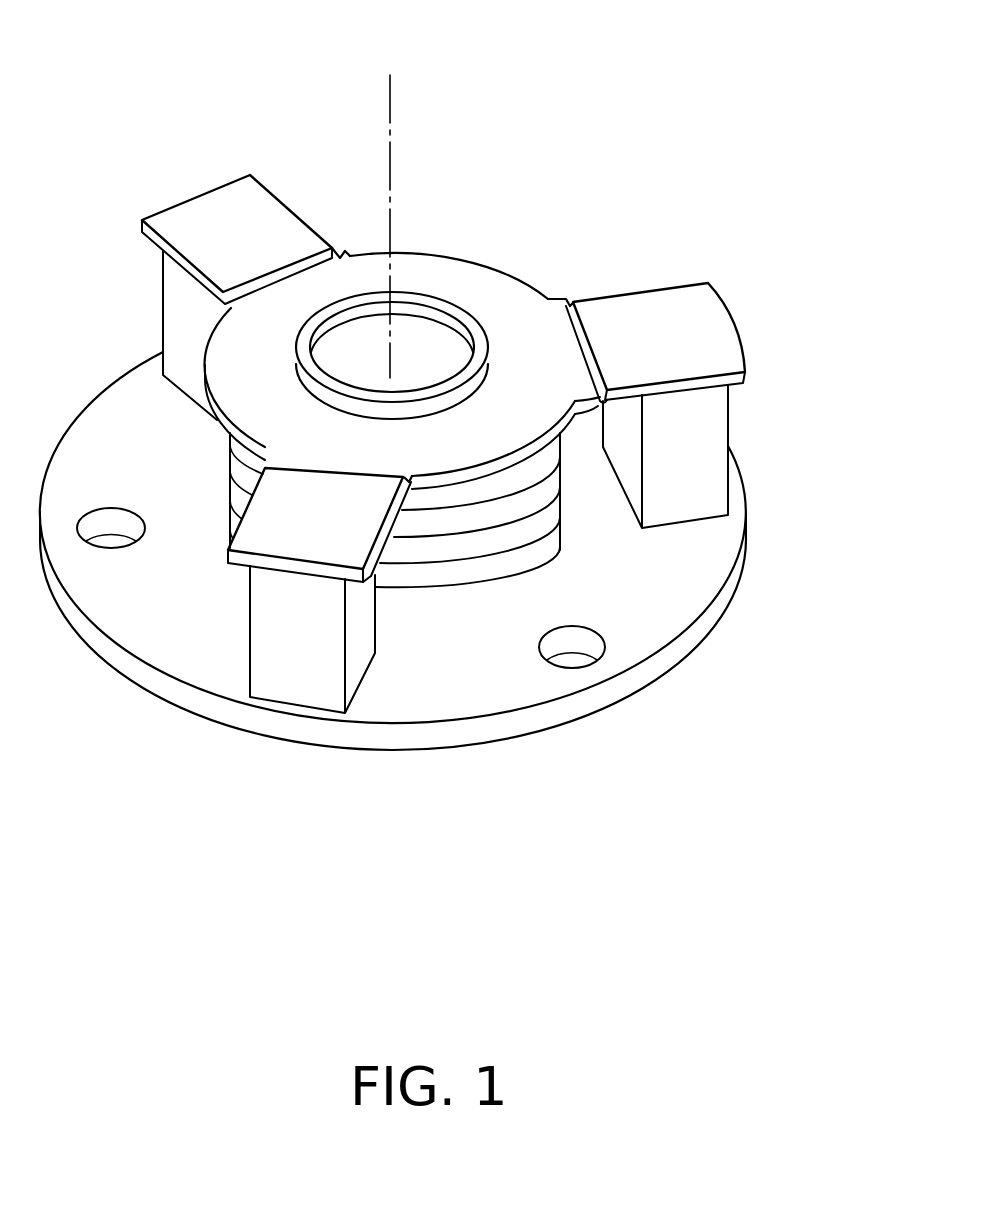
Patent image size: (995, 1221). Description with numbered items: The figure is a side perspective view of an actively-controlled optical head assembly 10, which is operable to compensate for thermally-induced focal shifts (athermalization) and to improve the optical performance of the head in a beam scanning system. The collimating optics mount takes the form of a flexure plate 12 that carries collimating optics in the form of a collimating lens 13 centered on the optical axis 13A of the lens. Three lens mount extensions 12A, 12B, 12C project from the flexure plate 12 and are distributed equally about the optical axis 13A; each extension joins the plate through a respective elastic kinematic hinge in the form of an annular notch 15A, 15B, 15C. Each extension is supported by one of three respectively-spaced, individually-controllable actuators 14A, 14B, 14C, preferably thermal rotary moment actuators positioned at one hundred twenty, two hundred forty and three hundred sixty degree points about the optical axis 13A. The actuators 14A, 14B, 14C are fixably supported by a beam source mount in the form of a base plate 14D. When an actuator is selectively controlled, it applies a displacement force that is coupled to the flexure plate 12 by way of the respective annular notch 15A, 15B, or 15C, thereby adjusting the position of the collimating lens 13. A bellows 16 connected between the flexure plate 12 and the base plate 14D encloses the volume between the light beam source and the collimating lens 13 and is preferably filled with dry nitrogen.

The optical head assembly 10 is at (546, 126).
The flexure plate 12 is at (496, 287).
The lens mount extension 12A is at (219, 200).
The lens mount extension 12B is at (718, 322).
The lens mount extension 12C is at (260, 540).
The collimating lens 13 is at (430, 372).
The optical axis 13A is at (395, 168).
The actuator 14A is at (176, 303).
The actuator 14B is at (718, 428).
The actuator 14C is at (333, 633).
The base plate 14D is at (565, 712).
The annular notch 15A is at (345, 243).
The annular notch 15B is at (569, 285).
The annular notch 15C is at (345, 462).
The bellows 16 is at (487, 562).